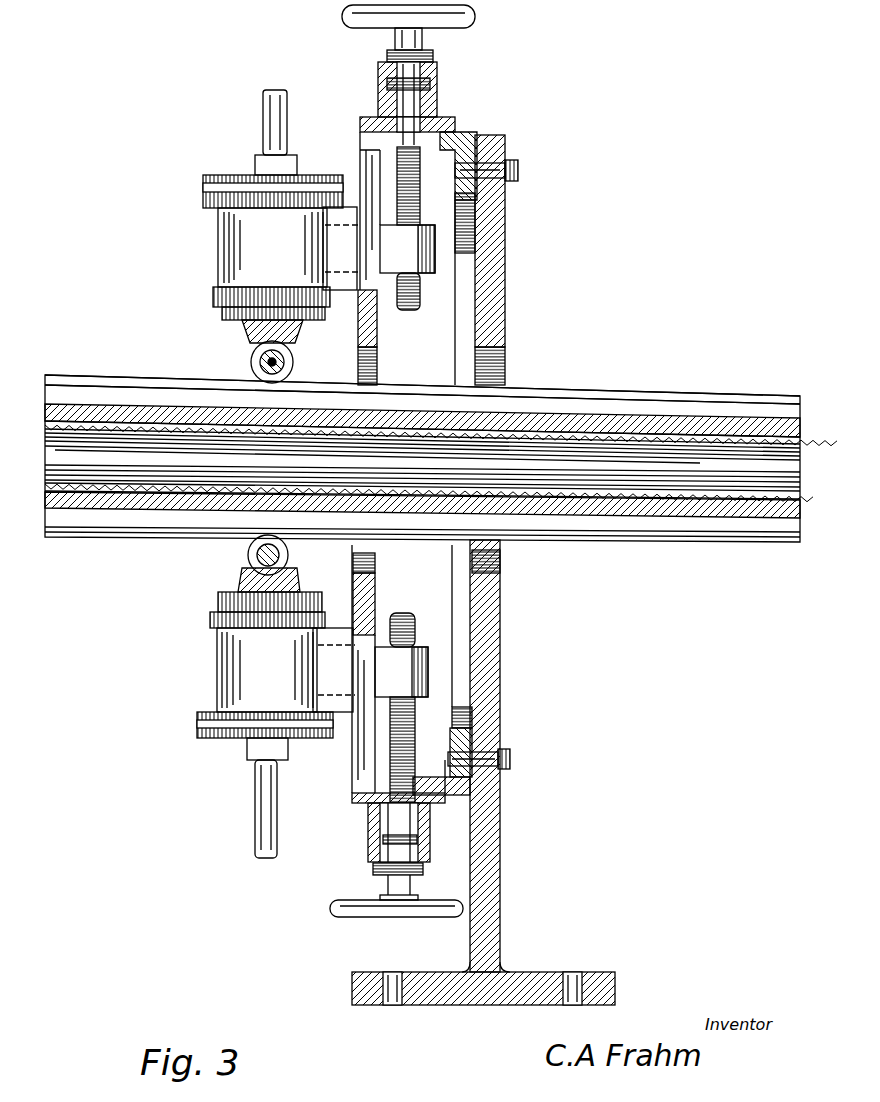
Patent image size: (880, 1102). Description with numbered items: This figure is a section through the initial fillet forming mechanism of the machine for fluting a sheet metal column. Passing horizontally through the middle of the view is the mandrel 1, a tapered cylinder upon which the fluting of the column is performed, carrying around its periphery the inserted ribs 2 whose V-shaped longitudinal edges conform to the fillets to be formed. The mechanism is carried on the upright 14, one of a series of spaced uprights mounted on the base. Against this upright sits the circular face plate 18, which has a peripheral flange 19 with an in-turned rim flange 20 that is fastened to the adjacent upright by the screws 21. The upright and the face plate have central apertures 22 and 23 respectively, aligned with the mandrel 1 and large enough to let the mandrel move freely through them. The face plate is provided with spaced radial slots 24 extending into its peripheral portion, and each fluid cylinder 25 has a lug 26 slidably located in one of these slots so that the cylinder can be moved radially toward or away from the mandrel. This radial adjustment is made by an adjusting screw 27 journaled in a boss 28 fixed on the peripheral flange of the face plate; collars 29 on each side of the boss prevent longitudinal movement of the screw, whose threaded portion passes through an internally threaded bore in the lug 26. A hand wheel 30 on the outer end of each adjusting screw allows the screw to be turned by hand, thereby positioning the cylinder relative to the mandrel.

The mandrel 1 is at (140, 507).
The ribs 2 is at (150, 395).
The upright 14 is at (502, 856).
The face plate 18 is at (368, 603).
The peripheral flange 19 is at (440, 768).
The in-turned rim flange 20 is at (475, 742).
The screws 21 is at (510, 760).
The central aperture 22 is at (504, 356).
The central aperture 23 is at (376, 357).
The radial slots 24 is at (365, 757).
The fluid cylinder 25 is at (215, 688).
The lug 26 is at (420, 655).
The adjusting screw 27 is at (414, 726).
The boss 28 is at (372, 834).
The collars 29 is at (420, 844).
The hand wheel 30 is at (385, 898).